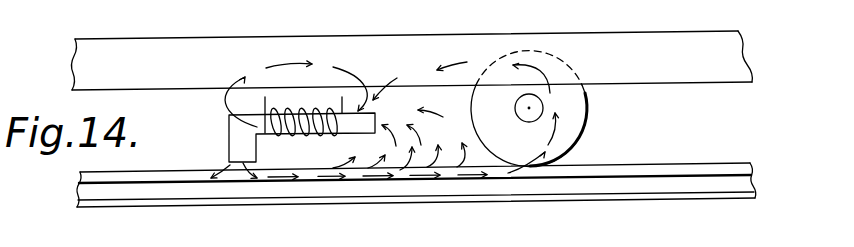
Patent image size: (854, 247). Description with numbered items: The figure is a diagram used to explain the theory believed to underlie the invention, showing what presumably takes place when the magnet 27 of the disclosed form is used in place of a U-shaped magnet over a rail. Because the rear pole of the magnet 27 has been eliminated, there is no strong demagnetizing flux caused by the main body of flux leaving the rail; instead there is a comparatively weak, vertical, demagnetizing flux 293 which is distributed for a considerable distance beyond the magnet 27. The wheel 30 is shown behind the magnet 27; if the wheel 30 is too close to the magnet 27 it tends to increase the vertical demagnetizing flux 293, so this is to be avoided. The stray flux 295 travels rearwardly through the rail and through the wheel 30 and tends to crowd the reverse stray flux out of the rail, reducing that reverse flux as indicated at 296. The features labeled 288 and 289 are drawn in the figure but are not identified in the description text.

The magnet 27 is at (229, 131).
The wheel 30 is at (583, 117).
The air channel 288 is at (307, 190).
The outlet opening 289 is at (229, 164).
The vertical demagnetizing flux 293 is at (408, 158).
The stray flux 295 is at (468, 176).
The reduced reverse flux 296 is at (370, 86).